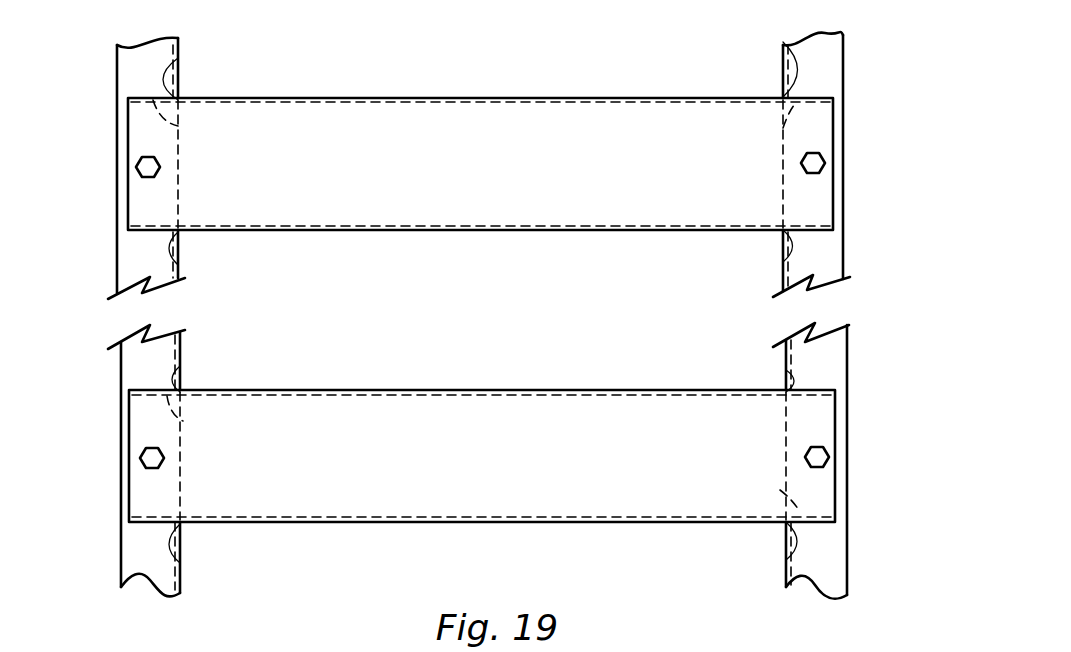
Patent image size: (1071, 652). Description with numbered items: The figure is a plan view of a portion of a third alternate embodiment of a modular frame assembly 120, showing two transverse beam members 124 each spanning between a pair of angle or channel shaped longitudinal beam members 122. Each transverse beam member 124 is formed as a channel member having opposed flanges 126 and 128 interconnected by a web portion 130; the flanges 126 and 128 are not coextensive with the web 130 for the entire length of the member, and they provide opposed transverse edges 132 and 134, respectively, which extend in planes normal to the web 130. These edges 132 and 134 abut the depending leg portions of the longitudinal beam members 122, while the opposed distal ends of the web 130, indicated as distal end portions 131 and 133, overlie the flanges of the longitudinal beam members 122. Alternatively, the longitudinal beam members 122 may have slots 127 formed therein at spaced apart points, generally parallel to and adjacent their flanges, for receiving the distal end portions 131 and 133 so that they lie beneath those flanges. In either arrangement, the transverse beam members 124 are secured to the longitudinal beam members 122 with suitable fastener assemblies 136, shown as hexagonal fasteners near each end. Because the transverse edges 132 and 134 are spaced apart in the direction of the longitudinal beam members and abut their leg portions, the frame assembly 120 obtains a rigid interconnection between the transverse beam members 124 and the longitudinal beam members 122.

The modular frame assembly 120 is at (931, 118).
The longitudinal beam member 122 is at (168, 573).
The transverse beam member 124 is at (423, 193).
The flange 126 is at (473, 98).
The slot 127 is at (188, 138).
The flange 128 is at (538, 232).
The web portion 130 is at (612, 128).
The distal end portion of web 131 is at (142, 190).
The transverse edge 132 is at (183, 58).
The distal end portion of web 133 is at (817, 192).
The transverse edge 134 is at (177, 262).
The fastener assembly 136 is at (150, 170).